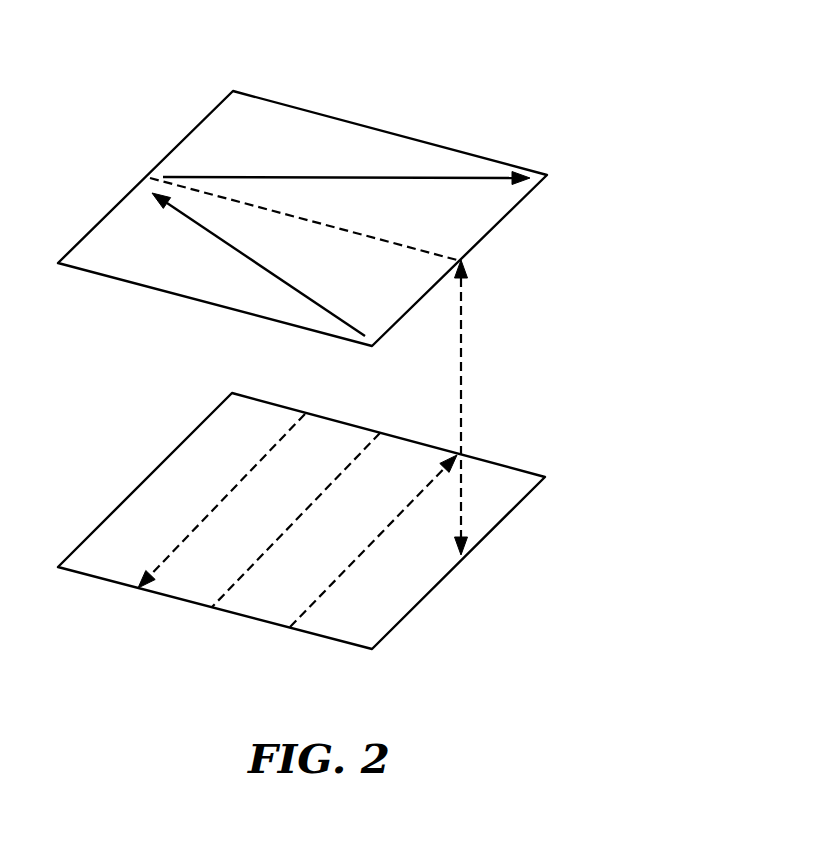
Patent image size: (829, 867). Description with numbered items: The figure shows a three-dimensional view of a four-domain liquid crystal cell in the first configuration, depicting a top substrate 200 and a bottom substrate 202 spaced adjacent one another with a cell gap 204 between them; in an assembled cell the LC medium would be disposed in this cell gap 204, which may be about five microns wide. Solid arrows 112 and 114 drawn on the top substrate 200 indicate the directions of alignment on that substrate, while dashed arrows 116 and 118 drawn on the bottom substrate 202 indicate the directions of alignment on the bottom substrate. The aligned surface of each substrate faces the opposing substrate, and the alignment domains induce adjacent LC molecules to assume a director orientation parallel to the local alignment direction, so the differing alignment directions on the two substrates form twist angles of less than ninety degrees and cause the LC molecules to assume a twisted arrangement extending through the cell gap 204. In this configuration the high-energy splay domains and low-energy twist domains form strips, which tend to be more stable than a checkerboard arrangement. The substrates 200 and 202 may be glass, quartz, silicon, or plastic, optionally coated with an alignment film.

The solid arrow 112 is at (359, 177).
The solid arrow 114 is at (275, 275).
The dashed arrow 116 is at (182, 542).
The dashed arrow 118 is at (332, 586).
The top substrate 200 is at (477, 215).
The bottom substrate 202 is at (413, 573).
The cell gap 204 is at (461, 395).